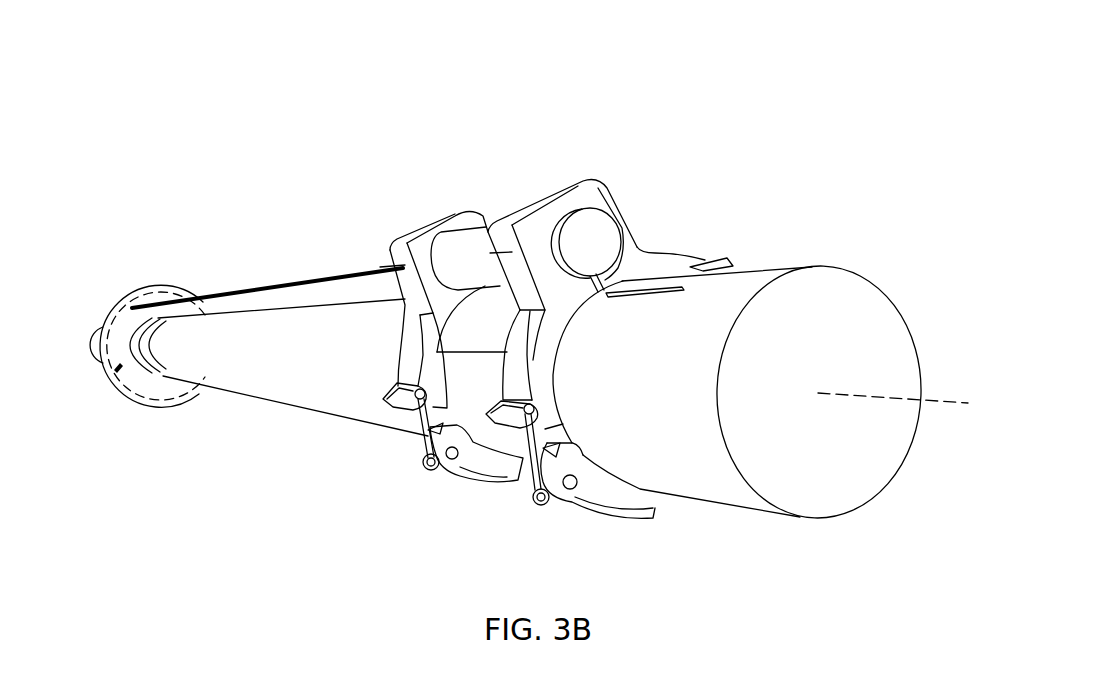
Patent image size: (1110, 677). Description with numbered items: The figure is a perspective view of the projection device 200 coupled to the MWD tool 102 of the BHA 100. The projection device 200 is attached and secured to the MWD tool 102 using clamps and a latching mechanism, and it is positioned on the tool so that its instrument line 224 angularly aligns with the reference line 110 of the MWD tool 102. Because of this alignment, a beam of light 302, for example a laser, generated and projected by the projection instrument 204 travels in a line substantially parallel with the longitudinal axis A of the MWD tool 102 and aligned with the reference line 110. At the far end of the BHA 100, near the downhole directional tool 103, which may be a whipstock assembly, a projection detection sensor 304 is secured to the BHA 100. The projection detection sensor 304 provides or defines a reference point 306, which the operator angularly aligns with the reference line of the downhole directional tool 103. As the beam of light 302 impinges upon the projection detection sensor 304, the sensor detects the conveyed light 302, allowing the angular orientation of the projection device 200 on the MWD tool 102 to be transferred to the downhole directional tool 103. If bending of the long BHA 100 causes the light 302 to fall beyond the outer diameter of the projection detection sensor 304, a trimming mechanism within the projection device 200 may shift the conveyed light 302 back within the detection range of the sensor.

The BHA 100 is at (231, 172).
The MWD tool 102 is at (790, 249).
The downhole directional tool 103 is at (86, 314).
The reference line 110 is at (673, 287).
The projection device 200 is at (544, 316).
The projection instrument 204 is at (472, 220).
The instrument line 224 is at (637, 247).
The beam of light 302 is at (294, 277).
The projection detection sensor 304 is at (172, 278).
The reference point 306 is at (115, 372).
The longitudinal axis A is at (947, 401).